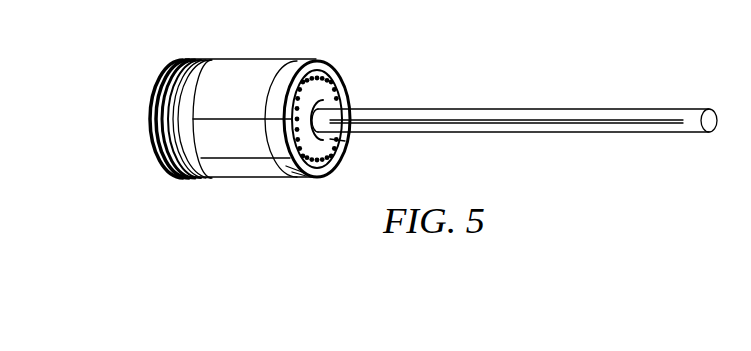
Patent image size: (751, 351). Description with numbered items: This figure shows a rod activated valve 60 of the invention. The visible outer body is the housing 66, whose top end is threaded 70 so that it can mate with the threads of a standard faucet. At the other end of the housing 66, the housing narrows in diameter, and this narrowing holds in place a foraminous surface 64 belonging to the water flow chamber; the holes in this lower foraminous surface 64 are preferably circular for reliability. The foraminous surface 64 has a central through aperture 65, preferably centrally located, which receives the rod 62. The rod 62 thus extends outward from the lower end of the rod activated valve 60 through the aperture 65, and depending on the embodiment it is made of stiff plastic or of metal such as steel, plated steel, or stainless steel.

The rod activated valve 60 is at (542, 53).
The rod 62 is at (603, 109).
The foraminous surface 64 is at (339, 82).
The central through aperture 65 is at (340, 146).
The housing 66 is at (263, 59).
The threads 70 is at (186, 59).